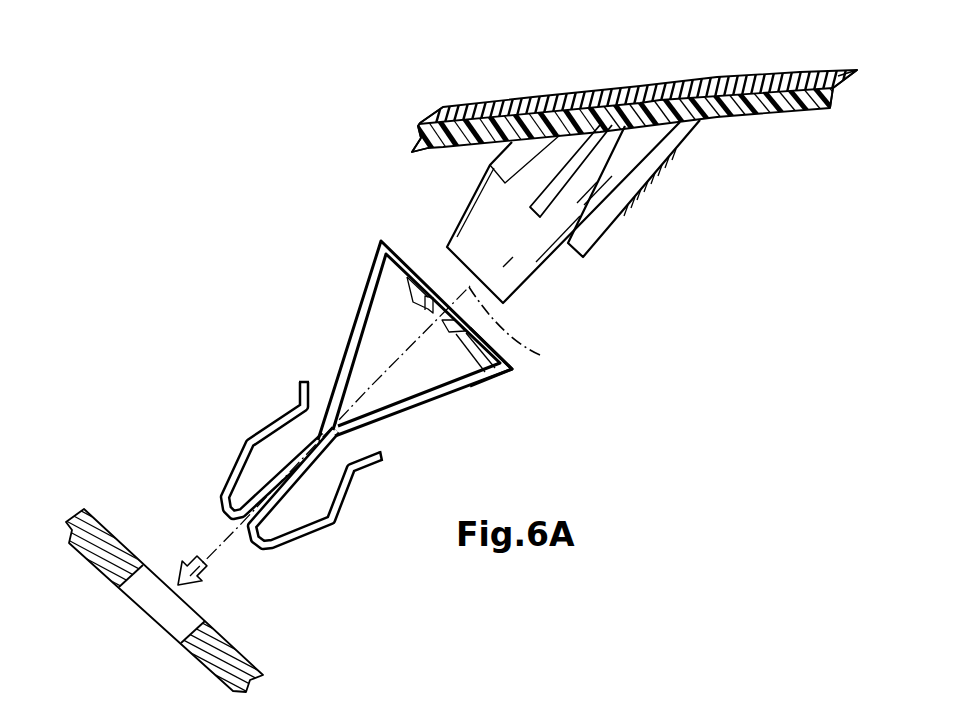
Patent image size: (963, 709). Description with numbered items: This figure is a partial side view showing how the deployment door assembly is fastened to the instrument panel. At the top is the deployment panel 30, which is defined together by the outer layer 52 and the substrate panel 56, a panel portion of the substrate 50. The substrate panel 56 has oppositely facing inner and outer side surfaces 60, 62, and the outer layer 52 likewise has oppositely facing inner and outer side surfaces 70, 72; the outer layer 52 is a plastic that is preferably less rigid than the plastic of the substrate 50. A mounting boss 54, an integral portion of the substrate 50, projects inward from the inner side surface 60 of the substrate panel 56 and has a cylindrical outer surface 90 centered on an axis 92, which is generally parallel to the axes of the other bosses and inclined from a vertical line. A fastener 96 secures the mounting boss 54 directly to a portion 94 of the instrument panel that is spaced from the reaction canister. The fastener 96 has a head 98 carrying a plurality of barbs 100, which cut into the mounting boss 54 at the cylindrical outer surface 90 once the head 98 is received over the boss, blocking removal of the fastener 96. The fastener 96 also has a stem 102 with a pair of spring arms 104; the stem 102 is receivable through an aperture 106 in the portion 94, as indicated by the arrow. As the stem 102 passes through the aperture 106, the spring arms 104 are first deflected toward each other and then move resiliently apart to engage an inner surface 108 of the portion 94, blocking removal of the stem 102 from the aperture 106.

The deployment panel 30 is at (478, 98).
The substrate 50 is at (780, 113).
The outer layer 52 is at (785, 63).
The mounting boss 54 is at (615, 227).
The substrate panel 56 is at (418, 140).
The inner side surface 60 is at (430, 150).
The outer side surface 62 is at (443, 107).
The inner side surface 70 is at (812, 107).
The outer side surface 72 is at (800, 67).
The cylindrical outer surface 90 is at (525, 263).
The axis 92 is at (540, 355).
The portion of the instrument panel 94 is at (108, 527).
The fastener 96 is at (345, 412).
The head 98 is at (515, 372).
The barbs 100 is at (413, 302).
The stem 102 is at (300, 478).
The spring arms 104 is at (246, 437).
The aperture 106 is at (125, 614).
The inner surface 108 is at (77, 550).